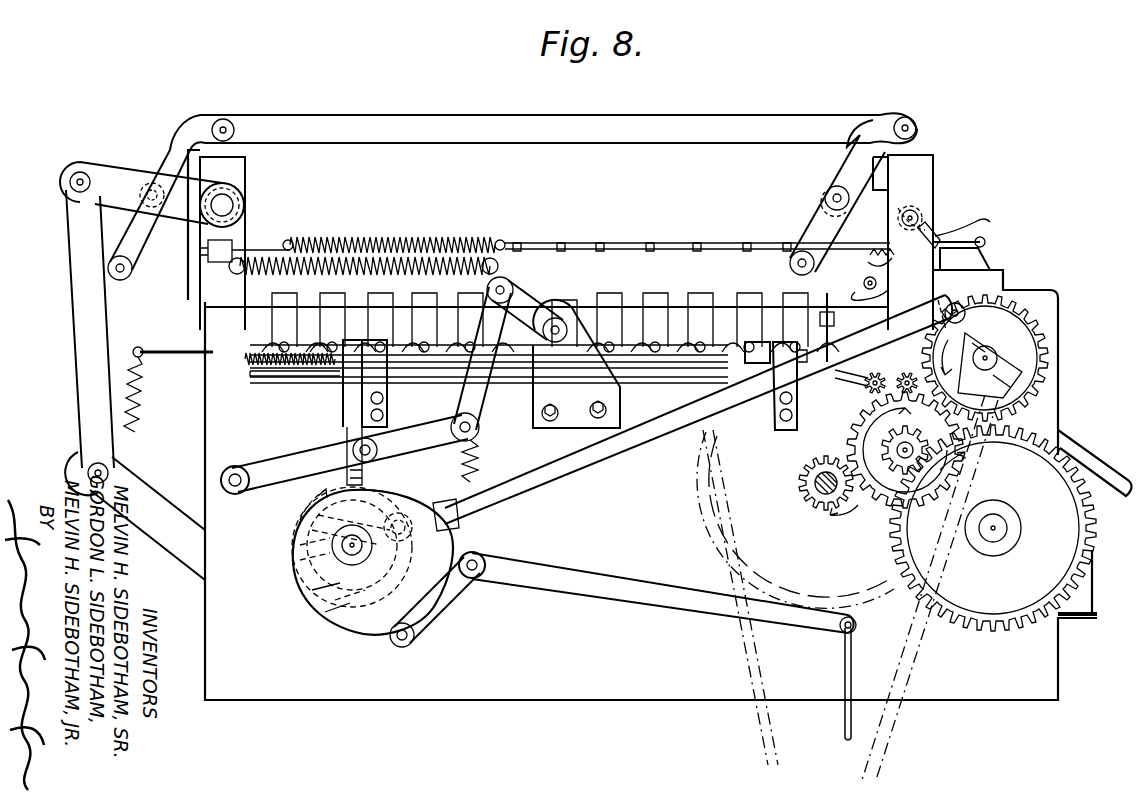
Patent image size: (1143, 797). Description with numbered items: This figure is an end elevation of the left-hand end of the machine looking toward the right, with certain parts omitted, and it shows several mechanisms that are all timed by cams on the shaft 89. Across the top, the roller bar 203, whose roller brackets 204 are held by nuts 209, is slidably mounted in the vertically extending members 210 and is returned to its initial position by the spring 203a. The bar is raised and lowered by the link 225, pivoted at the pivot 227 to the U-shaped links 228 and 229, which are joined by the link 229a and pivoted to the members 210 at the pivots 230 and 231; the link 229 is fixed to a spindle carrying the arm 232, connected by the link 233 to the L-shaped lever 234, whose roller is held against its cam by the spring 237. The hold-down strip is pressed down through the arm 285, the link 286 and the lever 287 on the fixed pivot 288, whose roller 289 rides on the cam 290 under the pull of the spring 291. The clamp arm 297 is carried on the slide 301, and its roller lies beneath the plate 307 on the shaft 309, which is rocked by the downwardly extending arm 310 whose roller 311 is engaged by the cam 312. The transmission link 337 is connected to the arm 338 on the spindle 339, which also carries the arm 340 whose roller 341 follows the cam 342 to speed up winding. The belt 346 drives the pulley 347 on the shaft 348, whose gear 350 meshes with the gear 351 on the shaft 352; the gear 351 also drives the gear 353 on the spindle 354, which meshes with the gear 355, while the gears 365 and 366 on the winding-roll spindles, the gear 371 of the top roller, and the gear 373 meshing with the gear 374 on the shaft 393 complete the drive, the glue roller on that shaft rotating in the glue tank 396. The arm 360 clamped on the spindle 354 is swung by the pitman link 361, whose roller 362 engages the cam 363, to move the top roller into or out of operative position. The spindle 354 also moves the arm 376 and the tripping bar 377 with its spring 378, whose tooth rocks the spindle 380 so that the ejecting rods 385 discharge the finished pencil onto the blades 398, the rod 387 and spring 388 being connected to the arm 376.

The shaft 89 is at (343, 542).
The bar 203 is at (617, 273).
The spring 203a is at (443, 267).
The bracket 204 is at (737, 297).
The nuts 209 is at (573, 240).
The vertically extending members 210 is at (238, 167).
The link 225 is at (822, 212).
The pivot 227 is at (148, 178).
The U-shaped link 228 is at (877, 132).
The U-shaped link 229 is at (187, 135).
The link 229a is at (480, 124).
The pivot 230 is at (913, 218).
The pivot 231 is at (223, 207).
The arm 232 is at (107, 173).
The link 233 is at (80, 228).
The L-shaped lever 234 is at (135, 487).
The spring 237 is at (140, 394).
The arm 285 is at (520, 297).
The link 286 is at (478, 393).
The lever 287 is at (444, 421).
The fixed pivot 288 is at (234, 467).
The roller 289 is at (440, 420).
The cam 290 is at (430, 478).
The spring 291 is at (478, 470).
The arm 297 is at (828, 296).
The slide 301 is at (277, 373).
The plate 307 is at (725, 347).
The shaft 309 is at (643, 362).
The downwardly extending arm 310 is at (357, 375).
The roller 311 is at (352, 452).
The cam 312 is at (303, 508).
The link 337 is at (853, 673).
The arm 338 is at (680, 593).
The spindle 339 is at (478, 575).
The arm 340 is at (447, 605).
The roller 341 is at (411, 646).
The cam 342 is at (373, 620).
The belt 346 is at (733, 637).
The pulley 347 is at (787, 585).
The shaft 348 is at (813, 481).
The gear 350 is at (800, 487).
The gear 351 is at (890, 497).
The shaft 352 is at (893, 448).
The gear 353 is at (1042, 374).
The spindle 354 is at (990, 360).
The gear 355 is at (954, 304).
The arm 360 is at (983, 337).
The pitman link 361 is at (667, 423).
The roller 362 is at (447, 530).
The cam 363 is at (343, 595).
The gear 365 is at (917, 413).
The gear 366 is at (865, 405).
The gear 371 is at (868, 385).
The gear 373 is at (903, 485).
The gear 374 is at (1058, 427).
The arm 376 is at (993, 253).
The tripping bar 377 is at (990, 217).
The spring 378 is at (870, 253).
The spindle 380 is at (933, 222).
The ejecting members or rods 385 is at (893, 286).
The rod 387 is at (967, 238).
The spring 388 is at (360, 222).
The shaft 393 is at (990, 537).
The glue tank 396 is at (1082, 605).
The blades 398 is at (1117, 443).